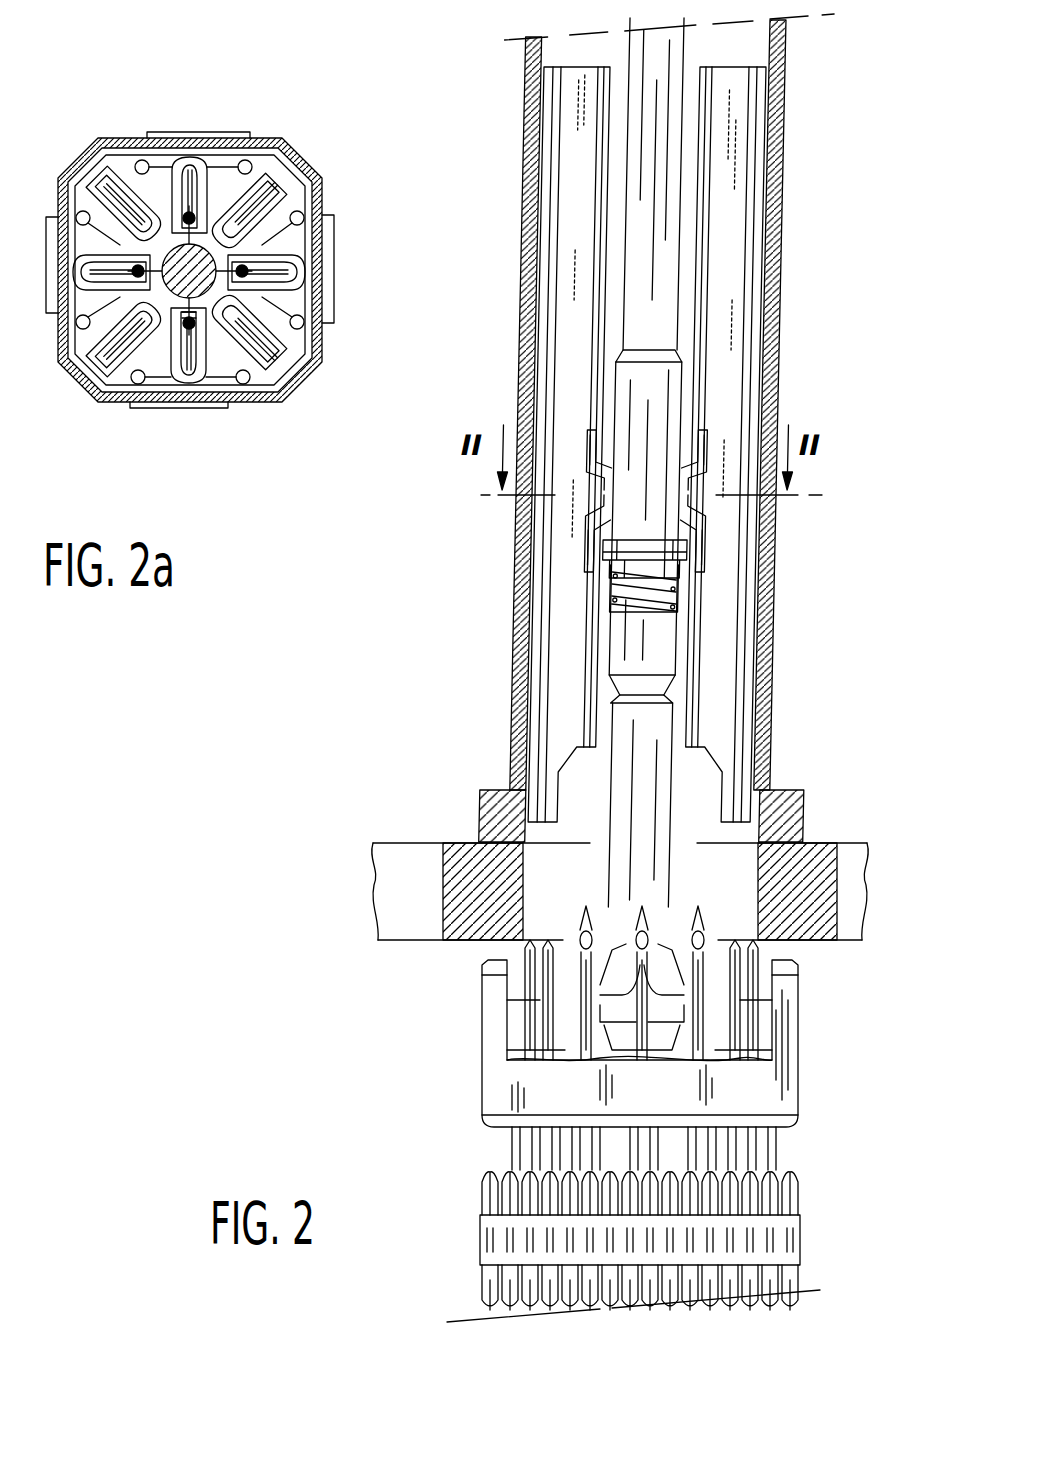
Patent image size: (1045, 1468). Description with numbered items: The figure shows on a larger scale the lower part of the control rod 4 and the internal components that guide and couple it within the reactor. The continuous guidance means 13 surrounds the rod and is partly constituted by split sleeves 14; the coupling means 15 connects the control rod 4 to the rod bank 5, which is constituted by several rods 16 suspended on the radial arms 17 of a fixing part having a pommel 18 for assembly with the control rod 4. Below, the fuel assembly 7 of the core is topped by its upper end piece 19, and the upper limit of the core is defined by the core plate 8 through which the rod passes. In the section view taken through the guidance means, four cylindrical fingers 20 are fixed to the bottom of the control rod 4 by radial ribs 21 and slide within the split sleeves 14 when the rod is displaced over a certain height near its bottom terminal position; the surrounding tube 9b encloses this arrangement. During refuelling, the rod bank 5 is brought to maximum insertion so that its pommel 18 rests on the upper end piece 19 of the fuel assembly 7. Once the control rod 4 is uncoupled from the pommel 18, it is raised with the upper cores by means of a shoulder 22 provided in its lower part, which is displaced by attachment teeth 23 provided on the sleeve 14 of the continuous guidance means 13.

In FIG. 2, the control rod 4 is at (684, 52).
In FIG. 2, the rod bank 5 is at (722, 930).
In FIG. 2, the fuel assembly 7 is at (470, 1218).
In FIG. 2, the core plate 8 is at (475, 870).
In FIG. 2a, the instrumentation tube housing 9b is at (306, 158).
In FIG. 2, the instrumentation tube housing 9b is at (782, 40).
In FIG. 2, the continuous guidance means 13 is at (694, 405).
In FIG. 2a, the split sleeves 14 is at (163, 188).
In FIG. 2, the split sleeves 14 is at (728, 223).
In FIG. 2a, the coupling means 15 is at (195, 262).
In FIG. 2, the coupling means 15 is at (690, 378).
In FIG. 2, the rods 16 is at (548, 1045).
In FIG. 2, the radial arms 17 is at (720, 978).
In FIG. 2, the pommel 18 is at (657, 745).
In FIG. 2, the upper end piece 19 is at (778, 1098).
In FIG. 2a, the cylindrical fingers 20 is at (186, 330).
In FIG. 2, the cylindrical fingers 20 is at (702, 440).
In FIG. 2a, the radial ribs 21 is at (165, 310).
In FIG. 2, the radial ribs 21 is at (606, 498).
In FIG. 2, the shoulder 22 is at (612, 566).
In FIG. 2, the attachment teeth 23 is at (692, 600).